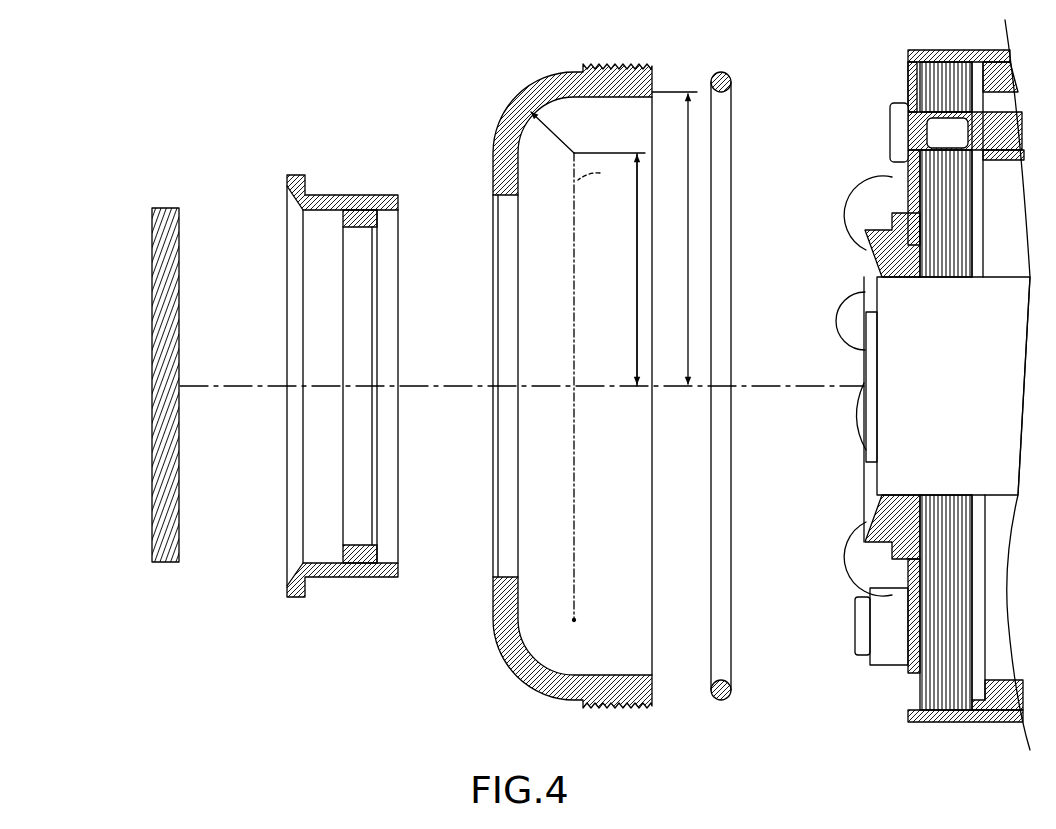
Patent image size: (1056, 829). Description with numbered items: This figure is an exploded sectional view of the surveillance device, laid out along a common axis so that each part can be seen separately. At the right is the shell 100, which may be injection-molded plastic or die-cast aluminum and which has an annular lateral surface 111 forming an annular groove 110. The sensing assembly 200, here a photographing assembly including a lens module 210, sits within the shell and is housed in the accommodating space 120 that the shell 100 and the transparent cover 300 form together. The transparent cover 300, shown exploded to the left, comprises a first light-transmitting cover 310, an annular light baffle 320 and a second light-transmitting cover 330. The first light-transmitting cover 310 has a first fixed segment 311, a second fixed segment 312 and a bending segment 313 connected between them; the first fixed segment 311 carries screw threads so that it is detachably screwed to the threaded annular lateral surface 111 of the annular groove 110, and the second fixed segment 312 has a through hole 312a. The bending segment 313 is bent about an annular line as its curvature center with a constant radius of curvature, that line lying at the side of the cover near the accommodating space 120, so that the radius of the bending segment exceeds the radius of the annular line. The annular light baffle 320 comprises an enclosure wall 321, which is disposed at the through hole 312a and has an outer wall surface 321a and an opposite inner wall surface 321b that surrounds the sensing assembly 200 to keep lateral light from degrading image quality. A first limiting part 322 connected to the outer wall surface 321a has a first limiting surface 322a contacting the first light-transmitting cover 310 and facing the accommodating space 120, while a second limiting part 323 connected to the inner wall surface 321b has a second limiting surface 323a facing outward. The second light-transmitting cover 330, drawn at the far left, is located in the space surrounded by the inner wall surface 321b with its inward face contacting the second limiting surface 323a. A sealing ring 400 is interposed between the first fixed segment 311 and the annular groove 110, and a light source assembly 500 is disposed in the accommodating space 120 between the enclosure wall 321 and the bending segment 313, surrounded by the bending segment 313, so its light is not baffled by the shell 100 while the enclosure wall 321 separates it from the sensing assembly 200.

The shell 100 is at (902, 50).
The annular groove 110 is at (966, 62).
The annular lateral surface 111 is at (908, 68).
The accommodating space 120 is at (998, 103).
The sensing assembly 200 is at (998, 268).
The lens module 210 is at (862, 366).
The transparent cover 300 is at (100, 96).
The first light-transmitting cover 310 is at (532, 70).
The first fixed segment 311 is at (603, 63).
The second fixed segment 312 is at (498, 203).
The through hole 312a is at (506, 200).
The bending segment 313 is at (515, 113).
The annular light baffle 320 is at (283, 181).
The enclosure wall 321 is at (338, 194).
The outer wall surface 321a is at (322, 195).
The inner wall surface 321b is at (343, 214).
The first limiting part 322 is at (297, 175).
The first limiting surface 322a is at (313, 180).
The second limiting part 323 is at (373, 230).
The second limiting surface 323a is at (343, 228).
The second light-transmitting cover 330 is at (158, 260).
The sealing ring 400 is at (722, 73).
The light source assembly 500 is at (882, 178).